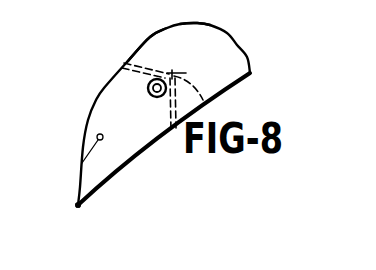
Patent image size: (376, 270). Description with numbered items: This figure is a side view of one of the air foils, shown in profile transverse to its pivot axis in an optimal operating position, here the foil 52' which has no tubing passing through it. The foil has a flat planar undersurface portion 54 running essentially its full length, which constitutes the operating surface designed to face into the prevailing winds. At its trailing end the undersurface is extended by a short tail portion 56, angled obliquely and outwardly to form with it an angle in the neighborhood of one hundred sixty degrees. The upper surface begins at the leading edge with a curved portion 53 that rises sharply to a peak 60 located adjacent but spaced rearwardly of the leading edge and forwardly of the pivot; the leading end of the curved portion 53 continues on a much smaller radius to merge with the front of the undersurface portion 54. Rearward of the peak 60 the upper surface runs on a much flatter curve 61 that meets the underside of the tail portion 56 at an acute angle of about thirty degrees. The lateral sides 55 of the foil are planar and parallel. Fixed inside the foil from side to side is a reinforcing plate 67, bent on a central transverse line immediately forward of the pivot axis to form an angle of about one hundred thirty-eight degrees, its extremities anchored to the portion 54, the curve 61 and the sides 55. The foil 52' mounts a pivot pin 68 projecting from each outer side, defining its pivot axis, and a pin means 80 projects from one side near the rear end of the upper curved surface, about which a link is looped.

The foil 52' is at (148, 114).
The curved portion 53 is at (206, 23).
The flat planar undersurface portion 54 is at (152, 144).
The lateral sides 55 is at (158, 87).
The tail portion 56 is at (84, 200).
The peak 60 is at (157, 32).
The flatter curve 61 is at (85, 132).
The reinforcing plate 67 is at (207, 106).
The pivot pin 68 is at (148, 100).
The pin means 80 is at (81, 160).